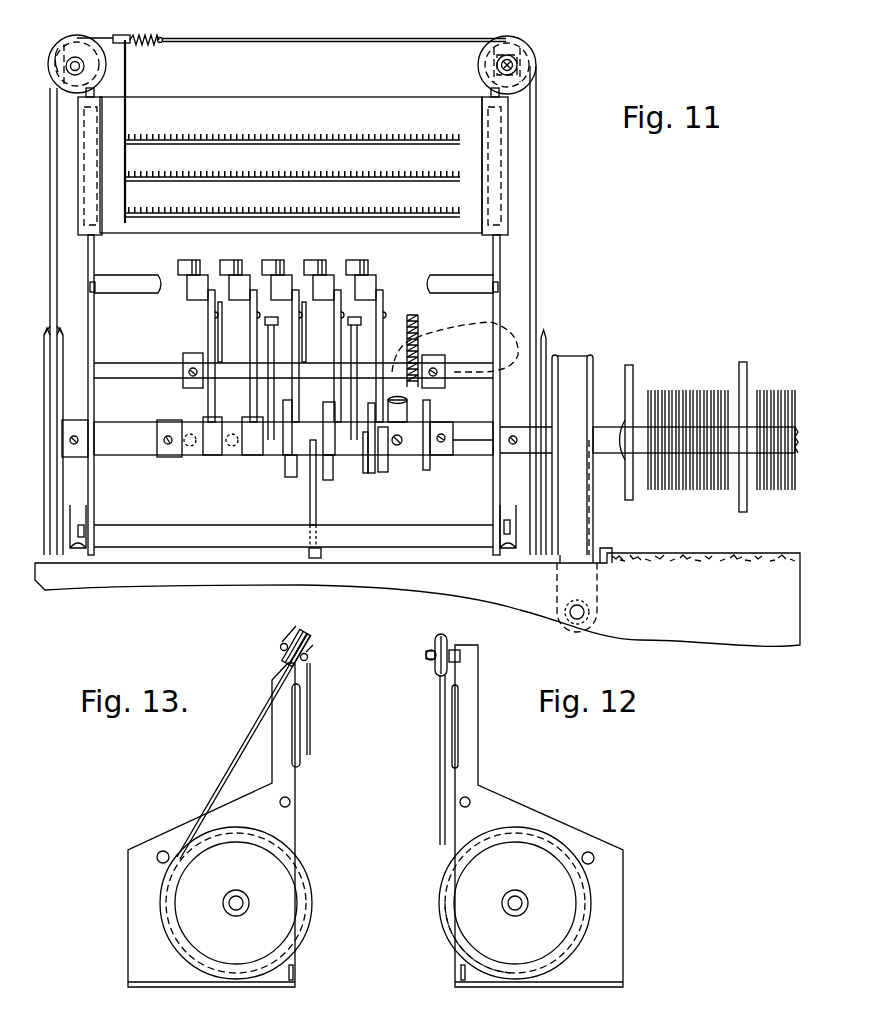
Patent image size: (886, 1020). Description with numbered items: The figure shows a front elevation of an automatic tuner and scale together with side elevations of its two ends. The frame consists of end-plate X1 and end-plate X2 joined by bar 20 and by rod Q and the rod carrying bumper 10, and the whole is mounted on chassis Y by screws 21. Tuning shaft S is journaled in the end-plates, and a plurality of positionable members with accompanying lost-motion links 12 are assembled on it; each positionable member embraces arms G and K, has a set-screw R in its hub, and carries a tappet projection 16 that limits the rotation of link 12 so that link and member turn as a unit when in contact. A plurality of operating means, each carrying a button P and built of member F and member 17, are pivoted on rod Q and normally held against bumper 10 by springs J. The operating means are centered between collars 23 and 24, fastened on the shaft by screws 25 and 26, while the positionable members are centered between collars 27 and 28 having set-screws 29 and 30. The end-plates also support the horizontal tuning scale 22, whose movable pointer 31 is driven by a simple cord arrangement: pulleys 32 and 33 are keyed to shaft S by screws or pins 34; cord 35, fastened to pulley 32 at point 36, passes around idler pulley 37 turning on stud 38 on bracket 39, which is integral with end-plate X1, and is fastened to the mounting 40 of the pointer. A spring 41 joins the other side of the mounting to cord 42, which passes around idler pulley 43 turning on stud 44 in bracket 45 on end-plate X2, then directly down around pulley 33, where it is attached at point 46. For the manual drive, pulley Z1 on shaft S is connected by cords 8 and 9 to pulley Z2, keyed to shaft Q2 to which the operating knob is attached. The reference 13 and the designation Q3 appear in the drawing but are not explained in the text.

In FIG. 11, the cord 8 is at (560, 552).
In FIG. 11, the cord 9 is at (596, 549).
In FIG. 11, the bumper 10 is at (134, 278).
In FIG. 11, the lost-motion link 12 is at (612, 190).
In FIG. 11, the section line 13 is at (42, 192).
In FIG. 11, the tappet projection 16 is at (219, 457).
In FIG. 11, the member 17 is at (216, 342).
In FIG. 11, the bar 20 is at (432, 528).
In FIG. 11, the screws 21 is at (78, 544).
In FIG. 11, the tuning scale 22 is at (294, 97).
In FIG. 13, the tuning scale 22 is at (296, 766).
In FIG. 12, the tuning scale 22 is at (460, 721).
In FIG. 11, the collar 23 is at (192, 352).
In FIG. 11, the collar 24 is at (431, 355).
In FIG. 11, the screw 25 is at (185, 362).
In FIG. 11, the screw 26 is at (438, 369).
In FIG. 11, the collar 27 is at (165, 420).
In FIG. 11, the collar 28 is at (443, 421).
In FIG. 11, the set-screw 29 is at (164, 449).
In FIG. 11, the set-screw 30 is at (447, 436).
In FIG. 11, the movable pointer 31 is at (129, 96).
In FIG. 11, the pulley 32 is at (50, 402).
In FIG. 13, the pulley 32 is at (168, 931).
In FIG. 11, the pulley 33 is at (548, 338).
In FIG. 12, the pulley 33 is at (572, 953).
In FIG. 11, the screws or pins 34 is at (74, 446).
In FIG. 11, the cord 35 is at (119, 40).
In FIG. 13, the cord 35 is at (231, 761).
In FIG. 11, the fastening point 36 is at (48, 341).
In FIG. 13, the fastening point 36 is at (294, 840).
In FIG. 11, the idler pulley 37 is at (83, 37).
In FIG. 13, the idler pulley 37 is at (310, 655).
In FIG. 11, the stud 38 is at (62, 81).
In FIG. 11, the bracket 39 is at (62, 50).
In FIG. 13, the bracket 39 is at (295, 640).
In FIG. 11, the mounting 40 is at (124, 36).
In FIG. 11, the spring 41 is at (149, 40).
In FIG. 11, the cord 42 is at (351, 40).
In FIG. 12, the cord 42 is at (439, 736).
In FIG. 11, the idler pulley 43 is at (536, 79).
In FIG. 12, the idler pulley 43 is at (435, 641).
In FIG. 11, the stud 44 is at (513, 60).
In FIG. 12, the stud 44 is at (427, 658).
In FIG. 11, the bracket 45 is at (522, 63).
In FIG. 12, the bracket 45 is at (449, 649).
In FIG. 12, the attachment point 46 is at (518, 976).
In FIG. 11, the member F is at (236, 343).
In FIG. 11, the arm G is at (293, 405).
In FIG. 11, the spring J is at (419, 331).
In FIG. 11, the arm K is at (323, 409).
In FIG. 11, the button P is at (189, 260).
In FIG. 11, the shaft Q is at (127, 381).
In FIG. 13, the shaft Q is at (158, 864).
In FIG. 12, the shaft Q is at (593, 862).
In FIG. 11, the shaft Q2 is at (586, 613).
In FIG. 11, the pivot Q3 is at (90, 286).
In FIG. 13, the pivot Q3 is at (280, 803).
In FIG. 12, the pivot Q3 is at (471, 803).
In FIG. 11, the set-screw R is at (270, 317).
In FIG. 11, the shaft S is at (461, 452).
In FIG. 13, the shaft S is at (238, 895).
In FIG. 12, the shaft S is at (516, 895).
In FIG. 11, the end-plate X1 is at (96, 332).
In FIG. 13, the end-plate X1 is at (296, 821).
In FIG. 11, the end-plate X2 is at (493, 495).
In FIG. 12, the end-plate X2 is at (480, 762).
In FIG. 11, the chassis Y is at (417, 599).
In FIG. 11, the pulley Z1 is at (577, 355).
In FIG. 11, the pulley Z2 is at (586, 623).